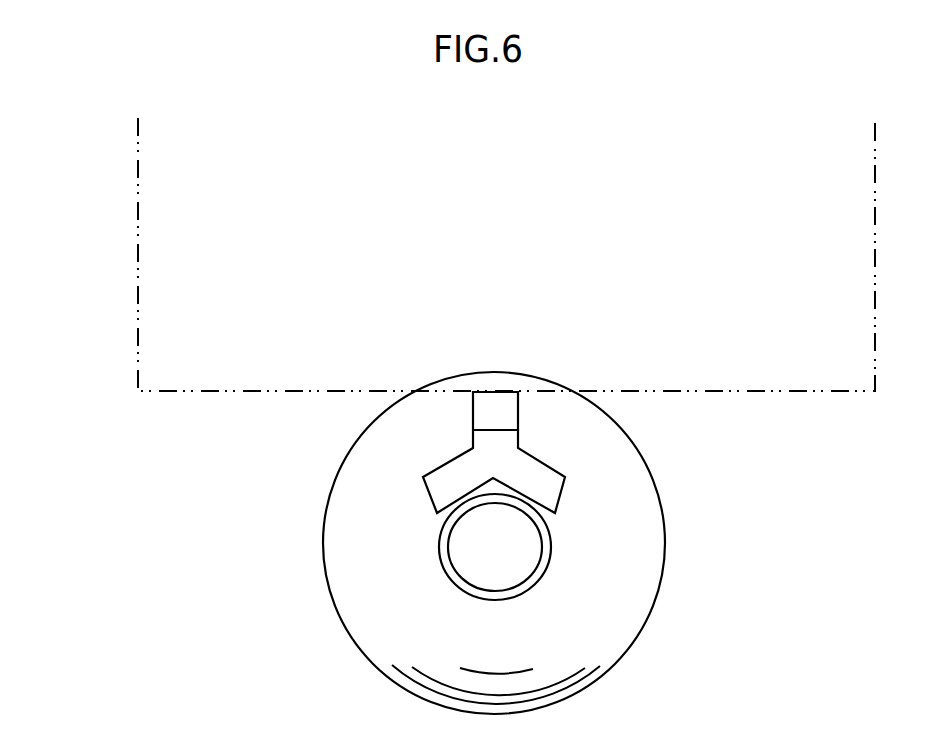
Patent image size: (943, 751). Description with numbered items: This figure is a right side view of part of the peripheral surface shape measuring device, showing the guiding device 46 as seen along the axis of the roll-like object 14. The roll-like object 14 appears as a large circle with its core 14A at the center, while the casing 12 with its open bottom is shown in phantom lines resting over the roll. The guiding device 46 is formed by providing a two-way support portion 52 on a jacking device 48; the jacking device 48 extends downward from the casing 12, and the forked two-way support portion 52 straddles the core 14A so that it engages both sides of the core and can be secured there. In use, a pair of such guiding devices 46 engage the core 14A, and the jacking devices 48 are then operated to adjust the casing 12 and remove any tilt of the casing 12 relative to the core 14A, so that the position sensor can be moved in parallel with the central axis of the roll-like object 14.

The casing 12 is at (138, 272).
The roll-like object 14 is at (627, 608).
The core 14A is at (475, 592).
The guiding device 46 is at (423, 503).
The jacking device 48 is at (517, 408).
The two-way support portion 52 is at (563, 495).